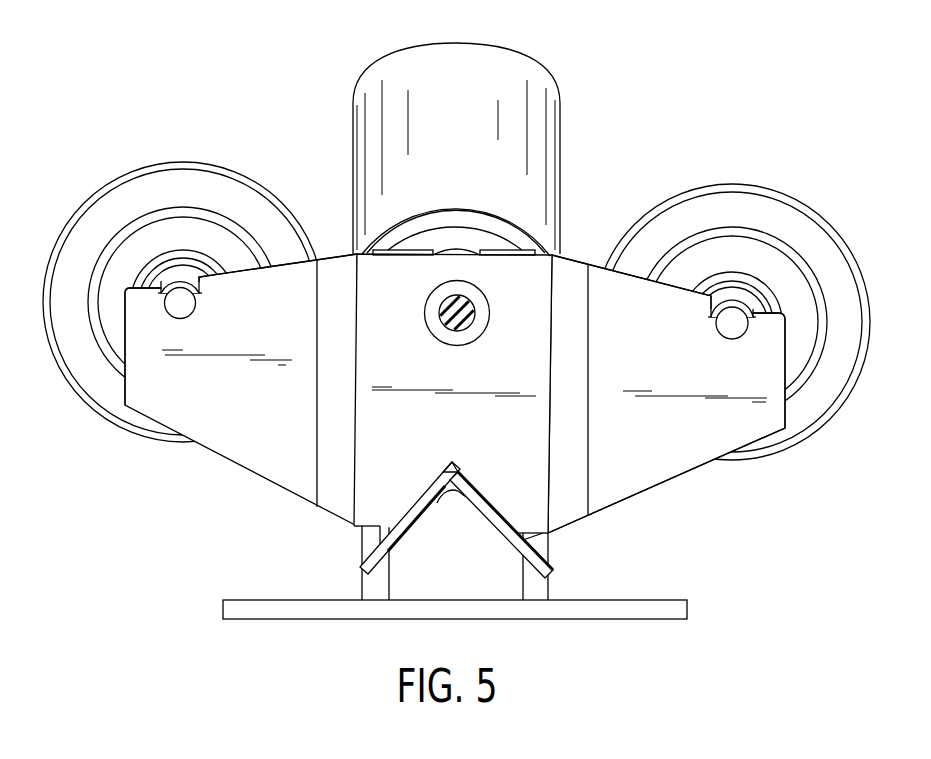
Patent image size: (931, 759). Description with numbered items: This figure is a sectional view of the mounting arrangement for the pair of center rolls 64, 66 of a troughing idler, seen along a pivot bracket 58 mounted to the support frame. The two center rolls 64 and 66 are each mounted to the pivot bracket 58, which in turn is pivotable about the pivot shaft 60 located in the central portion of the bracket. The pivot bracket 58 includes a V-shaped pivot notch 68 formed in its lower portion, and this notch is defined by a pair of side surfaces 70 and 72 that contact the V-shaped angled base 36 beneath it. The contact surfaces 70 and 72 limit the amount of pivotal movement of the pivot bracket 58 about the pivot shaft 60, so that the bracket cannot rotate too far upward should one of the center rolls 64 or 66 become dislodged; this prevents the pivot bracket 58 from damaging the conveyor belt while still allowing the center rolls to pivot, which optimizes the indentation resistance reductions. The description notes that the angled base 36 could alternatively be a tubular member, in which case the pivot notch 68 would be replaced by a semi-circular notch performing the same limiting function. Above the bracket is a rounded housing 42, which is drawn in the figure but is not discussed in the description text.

The angled base 36 is at (425, 512).
The drive housing 42 is at (498, 75).
The pivot bracket 58 is at (665, 462).
The pivot shaft 60 is at (463, 322).
The center roll 64 is at (204, 193).
The center roll 66 is at (742, 217).
The pivot notch 68 is at (456, 493).
The side surface 70 is at (402, 503).
The side surface 72 is at (503, 515).